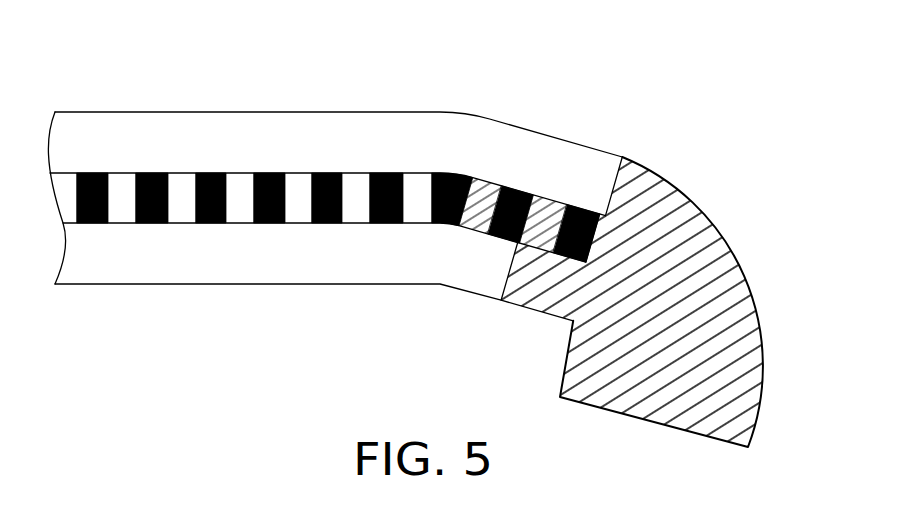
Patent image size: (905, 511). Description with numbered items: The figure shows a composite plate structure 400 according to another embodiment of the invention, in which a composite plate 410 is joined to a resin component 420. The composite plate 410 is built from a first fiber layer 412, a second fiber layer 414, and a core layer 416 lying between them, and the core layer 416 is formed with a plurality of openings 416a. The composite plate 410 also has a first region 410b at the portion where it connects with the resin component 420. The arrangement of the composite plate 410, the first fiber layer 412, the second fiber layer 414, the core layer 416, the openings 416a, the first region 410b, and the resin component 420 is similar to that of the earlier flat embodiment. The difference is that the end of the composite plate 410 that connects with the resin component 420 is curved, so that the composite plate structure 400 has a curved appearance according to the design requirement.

The composite plate structure 400 is at (439, 250).
The composite plate 410 is at (335, 191).
The first region 410b is at (536, 342).
The first fiber layer 412 is at (242, 133).
The second fiber layer 414 is at (358, 253).
The core layer 416 is at (271, 173).
The openings 416a is at (123, 197).
The resin component 420 is at (692, 263).